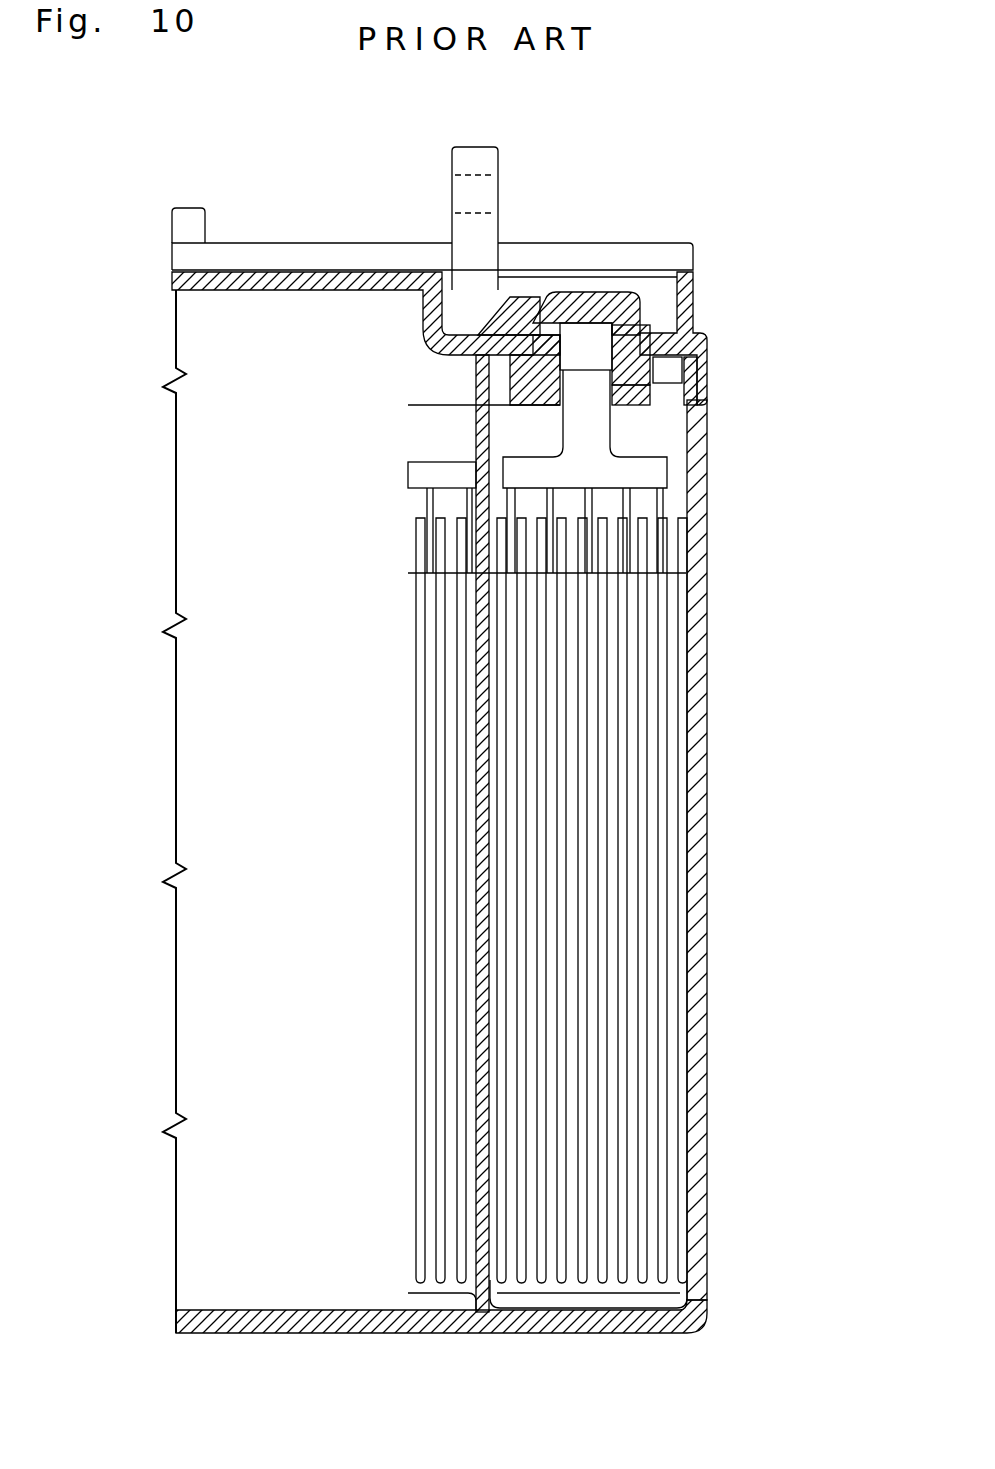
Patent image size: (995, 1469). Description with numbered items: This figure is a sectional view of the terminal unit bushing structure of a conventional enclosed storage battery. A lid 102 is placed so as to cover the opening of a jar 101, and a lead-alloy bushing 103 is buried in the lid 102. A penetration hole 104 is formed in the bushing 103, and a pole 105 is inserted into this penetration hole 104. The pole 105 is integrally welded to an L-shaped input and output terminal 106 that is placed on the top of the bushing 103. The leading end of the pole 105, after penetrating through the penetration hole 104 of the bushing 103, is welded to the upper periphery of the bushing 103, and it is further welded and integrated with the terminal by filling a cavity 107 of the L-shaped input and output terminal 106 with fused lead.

The jar 101 is at (702, 498).
The lid 102 is at (693, 288).
The lead-alloy bushing 103 is at (640, 337).
The penetration hole 104 is at (642, 405).
The pole 105 is at (585, 343).
The L-shaped input and output terminal 106 is at (482, 193).
The cavity 107 is at (575, 296).